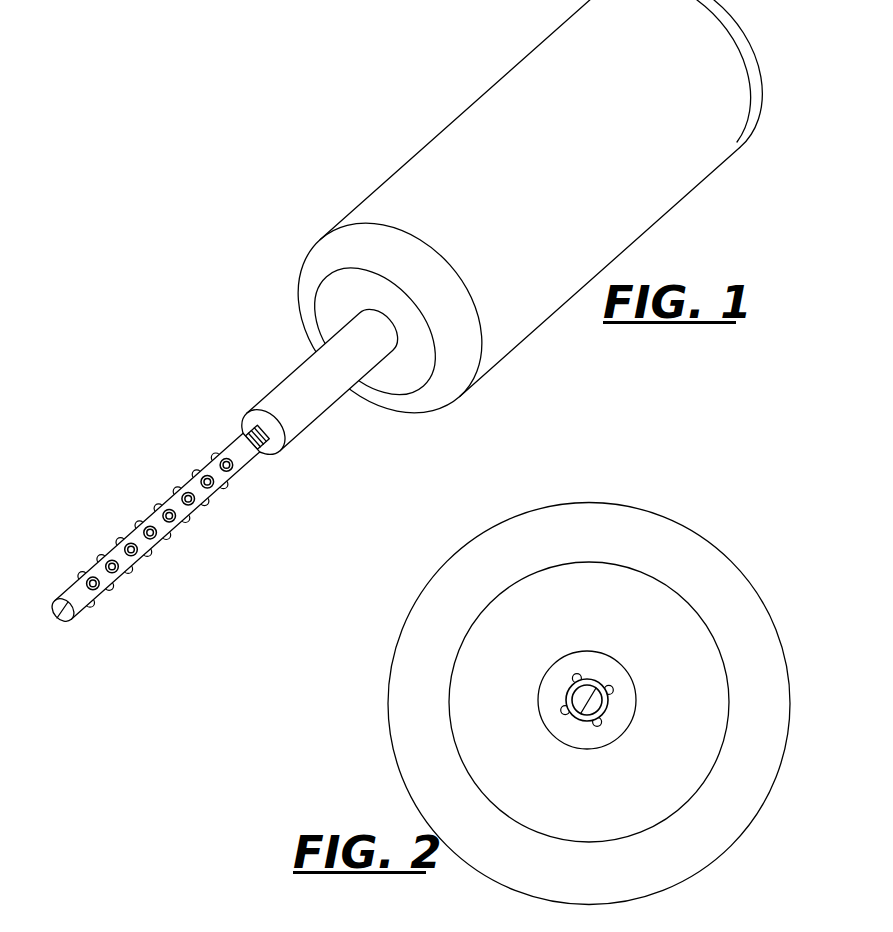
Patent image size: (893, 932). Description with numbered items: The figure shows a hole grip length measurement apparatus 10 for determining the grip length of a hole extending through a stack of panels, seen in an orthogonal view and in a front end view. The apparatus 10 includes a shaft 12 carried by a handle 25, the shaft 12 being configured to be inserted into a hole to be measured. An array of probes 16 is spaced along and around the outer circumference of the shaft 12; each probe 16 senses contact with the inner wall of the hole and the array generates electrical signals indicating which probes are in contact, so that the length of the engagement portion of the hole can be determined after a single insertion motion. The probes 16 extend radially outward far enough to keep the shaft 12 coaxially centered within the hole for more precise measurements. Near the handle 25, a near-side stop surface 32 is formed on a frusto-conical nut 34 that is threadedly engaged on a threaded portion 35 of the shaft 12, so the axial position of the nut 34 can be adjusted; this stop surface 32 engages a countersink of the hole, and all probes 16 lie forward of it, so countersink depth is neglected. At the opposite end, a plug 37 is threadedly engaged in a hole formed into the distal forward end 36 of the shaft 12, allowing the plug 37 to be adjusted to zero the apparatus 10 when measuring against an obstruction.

In FIG. 1, the hole grip length measurement apparatus 10 is at (398, 337).
In FIG. 2, the hole grip length measurement apparatus 10 is at (536, 704).
In FIG. 1, the shaft 12 is at (147, 495).
In FIG. 2, the shaft 12 is at (595, 712).
In FIG. 1, the probes 16 is at (100, 552).
In FIG. 2, the probes 16 is at (611, 738).
In FIG. 1, the handle 25 is at (688, 155).
In FIG. 2, the handle 25 is at (728, 588).
In FIG. 1, the near-side stop surface 32 is at (289, 457).
In FIG. 2, the near-side stop surface 32 is at (587, 671).
In FIG. 1, the frusto-conical nut 34 is at (278, 447).
In FIG. 2, the frusto-conical nut 34 is at (583, 659).
In FIG. 1, the threaded portion 35 is at (258, 433).
In FIG. 1, the distal forward end 36 is at (89, 634).
In FIG. 2, the distal forward end 36 is at (596, 702).
In FIG. 1, the plug 37 is at (65, 618).